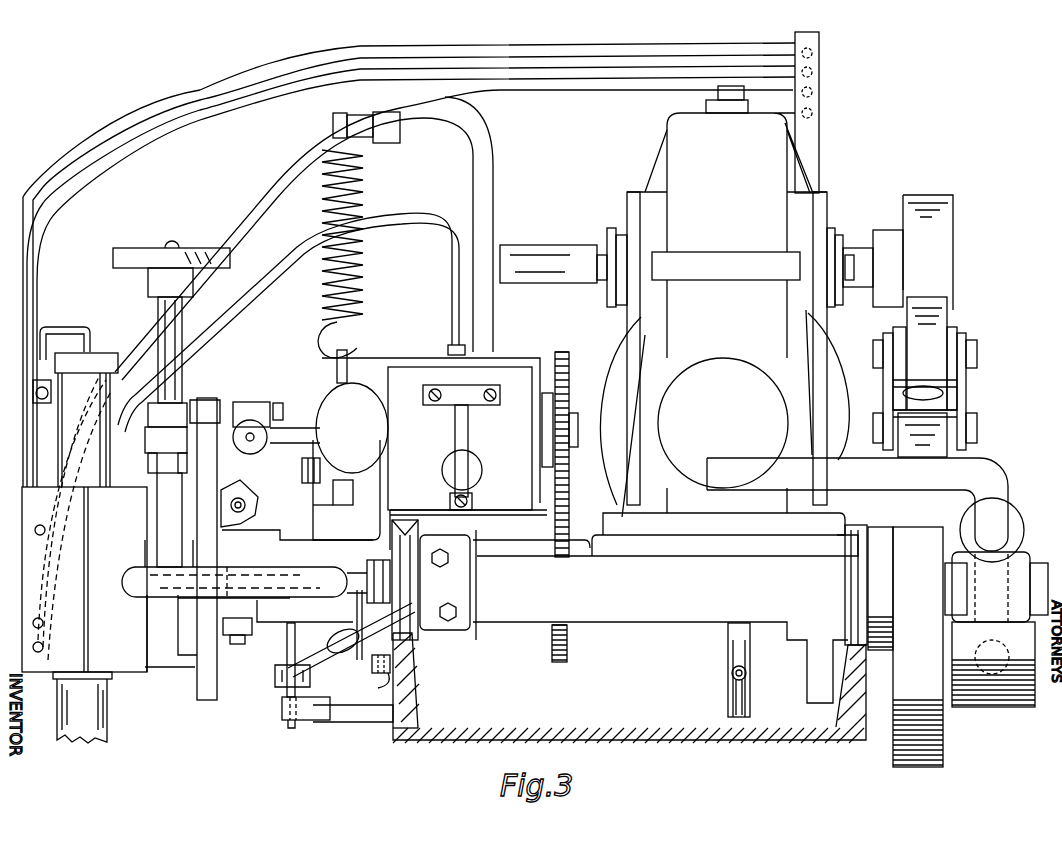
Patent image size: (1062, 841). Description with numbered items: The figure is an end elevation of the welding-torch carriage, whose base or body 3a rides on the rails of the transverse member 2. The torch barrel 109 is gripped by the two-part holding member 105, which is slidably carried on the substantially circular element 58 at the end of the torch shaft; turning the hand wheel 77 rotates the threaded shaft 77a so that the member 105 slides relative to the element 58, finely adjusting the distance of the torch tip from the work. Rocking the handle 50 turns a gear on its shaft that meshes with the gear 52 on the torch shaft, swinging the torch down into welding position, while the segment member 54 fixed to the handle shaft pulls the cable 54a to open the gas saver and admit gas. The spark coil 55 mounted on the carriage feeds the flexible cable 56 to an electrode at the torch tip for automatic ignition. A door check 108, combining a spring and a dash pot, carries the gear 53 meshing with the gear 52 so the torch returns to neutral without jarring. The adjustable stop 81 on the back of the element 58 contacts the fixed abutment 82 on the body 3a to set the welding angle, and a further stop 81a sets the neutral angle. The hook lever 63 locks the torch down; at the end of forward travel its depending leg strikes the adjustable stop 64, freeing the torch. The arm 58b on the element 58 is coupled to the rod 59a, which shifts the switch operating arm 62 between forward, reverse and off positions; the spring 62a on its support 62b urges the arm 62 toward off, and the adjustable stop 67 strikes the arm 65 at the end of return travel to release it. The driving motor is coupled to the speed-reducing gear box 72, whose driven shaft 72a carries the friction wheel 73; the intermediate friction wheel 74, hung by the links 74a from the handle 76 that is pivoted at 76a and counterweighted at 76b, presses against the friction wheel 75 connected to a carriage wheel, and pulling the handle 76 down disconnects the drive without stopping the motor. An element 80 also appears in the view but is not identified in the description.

The transverse member 2 is at (415, 688).
The carriage base 3a is at (643, 607).
The handle 50 is at (145, 598).
The gear 52 is at (568, 645).
The gear 53 is at (572, 356).
The segment member 54 is at (752, 650).
The cable 54a is at (728, 688).
The spark coil 55 is at (424, 454).
The flexible cable 56 is at (258, 282).
The circular element 58 is at (196, 688).
The arm 58b is at (218, 402).
The rod 59a is at (283, 447).
The operating arm 62 is at (335, 375).
The spring 62a is at (366, 292).
The support 62b is at (478, 178).
The hook lever 63 is at (290, 648).
The adjustable stop 64 is at (282, 712).
The arm 65 is at (370, 675).
The adjustable stop 67 is at (385, 685).
The speed-reducing gear box 72 is at (775, 152).
The driven shaft 72a is at (525, 250).
The friction wheel 73 is at (945, 228).
The intermediate friction drive wheel 74 is at (930, 332).
The links 74a is at (893, 392).
The friction wheel 75 is at (890, 748).
The handle 76 is at (992, 477).
The pivot 76a is at (1035, 587).
The counterweight 76b is at (987, 707).
The hand wheel 77 is at (140, 248).
The shaft 77a is at (160, 308).
The arm 80 is at (322, 650).
The adjustable stop 81 is at (238, 643).
The adjustable stop 81a is at (250, 510).
The fixed abutment 82 is at (257, 573).
The torch holding member 105 is at (84, 615).
The door check 108 is at (352, 428).
The torch barrel 109 is at (112, 430).